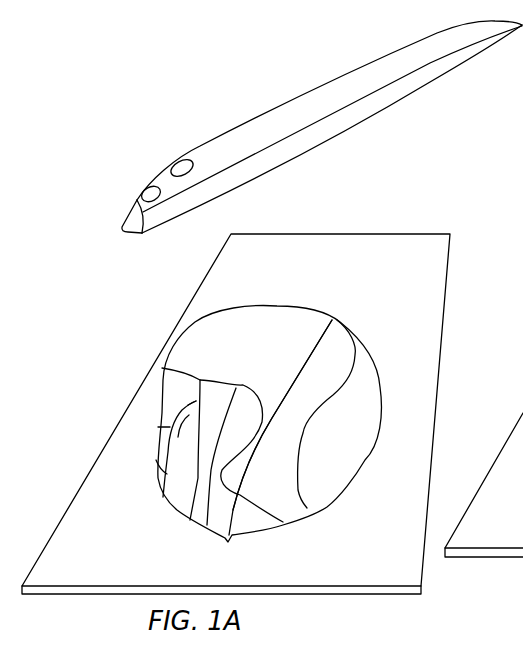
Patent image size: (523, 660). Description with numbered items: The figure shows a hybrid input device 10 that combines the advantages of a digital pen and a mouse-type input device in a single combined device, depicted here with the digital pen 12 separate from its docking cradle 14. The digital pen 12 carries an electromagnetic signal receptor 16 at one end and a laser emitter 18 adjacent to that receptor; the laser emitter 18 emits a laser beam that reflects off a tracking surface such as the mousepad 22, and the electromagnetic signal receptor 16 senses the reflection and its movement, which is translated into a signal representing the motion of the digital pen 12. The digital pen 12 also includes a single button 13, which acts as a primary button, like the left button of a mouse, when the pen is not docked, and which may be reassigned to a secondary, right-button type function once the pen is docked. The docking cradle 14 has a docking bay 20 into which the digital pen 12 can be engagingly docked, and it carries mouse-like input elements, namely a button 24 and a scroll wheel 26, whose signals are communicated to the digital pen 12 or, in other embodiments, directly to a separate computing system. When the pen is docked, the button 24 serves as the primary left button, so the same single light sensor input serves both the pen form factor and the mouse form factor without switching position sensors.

The hybrid input device 10 is at (104, 92).
The digital pen 12 is at (253, 110).
The button 13 is at (180, 163).
The laser emitter 18 is at (136, 199).
The electromagnetic signal receptor 16 is at (121, 230).
The mousepad 22 is at (455, 229).
The docking cradle 14 is at (203, 310).
The docking bay 20 is at (285, 523).
The button 24 is at (166, 477).
The scroll wheel 26 is at (168, 428).